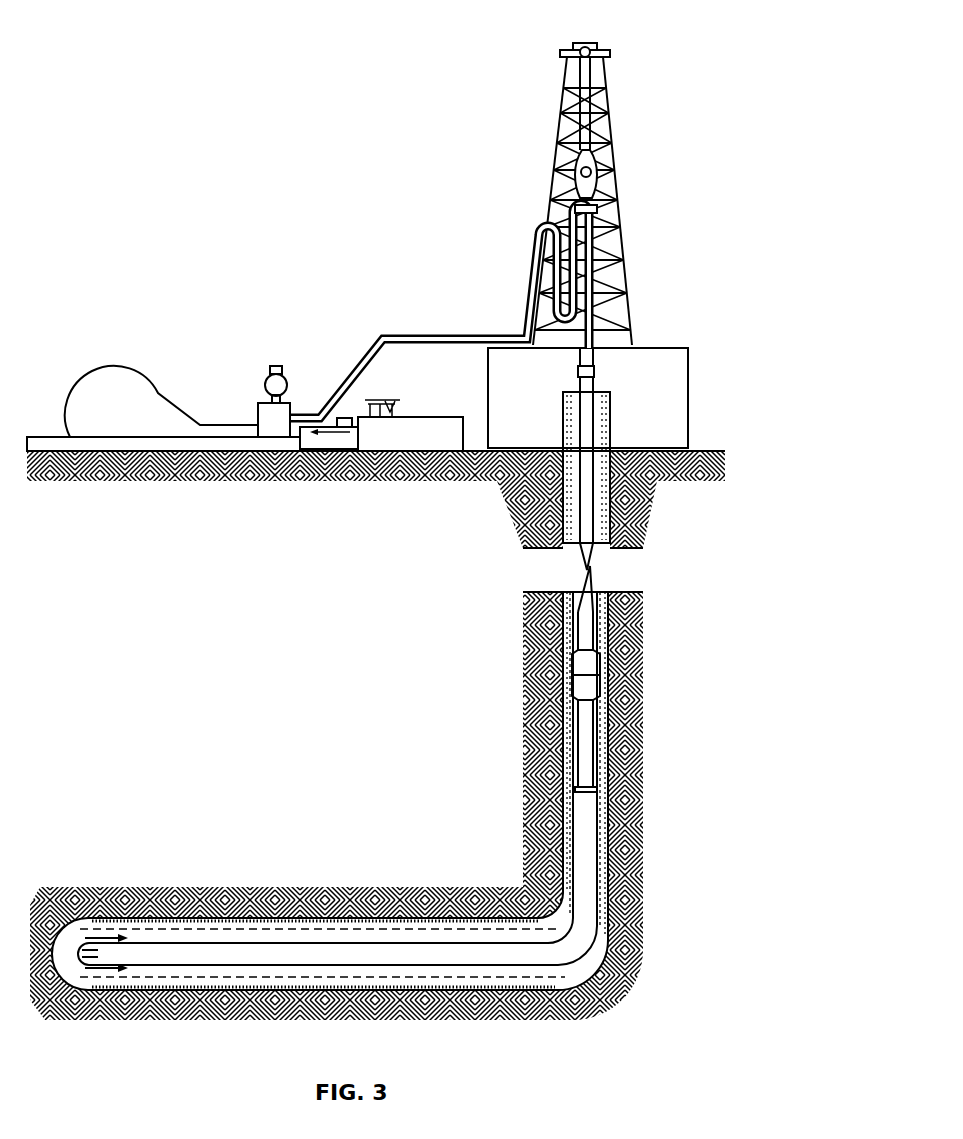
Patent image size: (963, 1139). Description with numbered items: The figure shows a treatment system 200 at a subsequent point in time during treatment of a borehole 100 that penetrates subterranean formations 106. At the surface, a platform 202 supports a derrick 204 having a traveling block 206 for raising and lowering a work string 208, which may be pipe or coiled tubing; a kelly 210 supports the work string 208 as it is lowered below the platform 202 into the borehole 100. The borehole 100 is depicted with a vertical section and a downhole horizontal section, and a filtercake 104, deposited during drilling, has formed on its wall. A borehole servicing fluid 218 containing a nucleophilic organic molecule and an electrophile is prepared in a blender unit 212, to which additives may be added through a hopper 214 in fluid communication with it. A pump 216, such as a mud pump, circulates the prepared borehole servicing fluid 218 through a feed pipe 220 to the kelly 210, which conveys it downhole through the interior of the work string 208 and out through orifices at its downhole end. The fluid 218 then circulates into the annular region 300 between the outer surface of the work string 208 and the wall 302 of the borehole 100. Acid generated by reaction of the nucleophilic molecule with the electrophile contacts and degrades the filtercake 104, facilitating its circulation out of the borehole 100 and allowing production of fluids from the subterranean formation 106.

The treatment system 200 is at (108, 36).
The platform 202 is at (689, 372).
The derrick 204 is at (606, 104).
The traveling block 206 is at (603, 153).
The work string 208 is at (598, 526).
The kelly 210 is at (620, 270).
The blender unit 212 is at (405, 447).
The hopper 214 is at (380, 426).
The pump 216 is at (130, 418).
The borehole servicing fluid 218 is at (95, 934).
The feed pipe 220 is at (410, 335).
The borehole 100 is at (620, 640).
The filtercake 104 is at (574, 680).
The subterranean formation 106 is at (419, 808).
The annular region 300 is at (276, 933).
The wall 302 is at (358, 920).